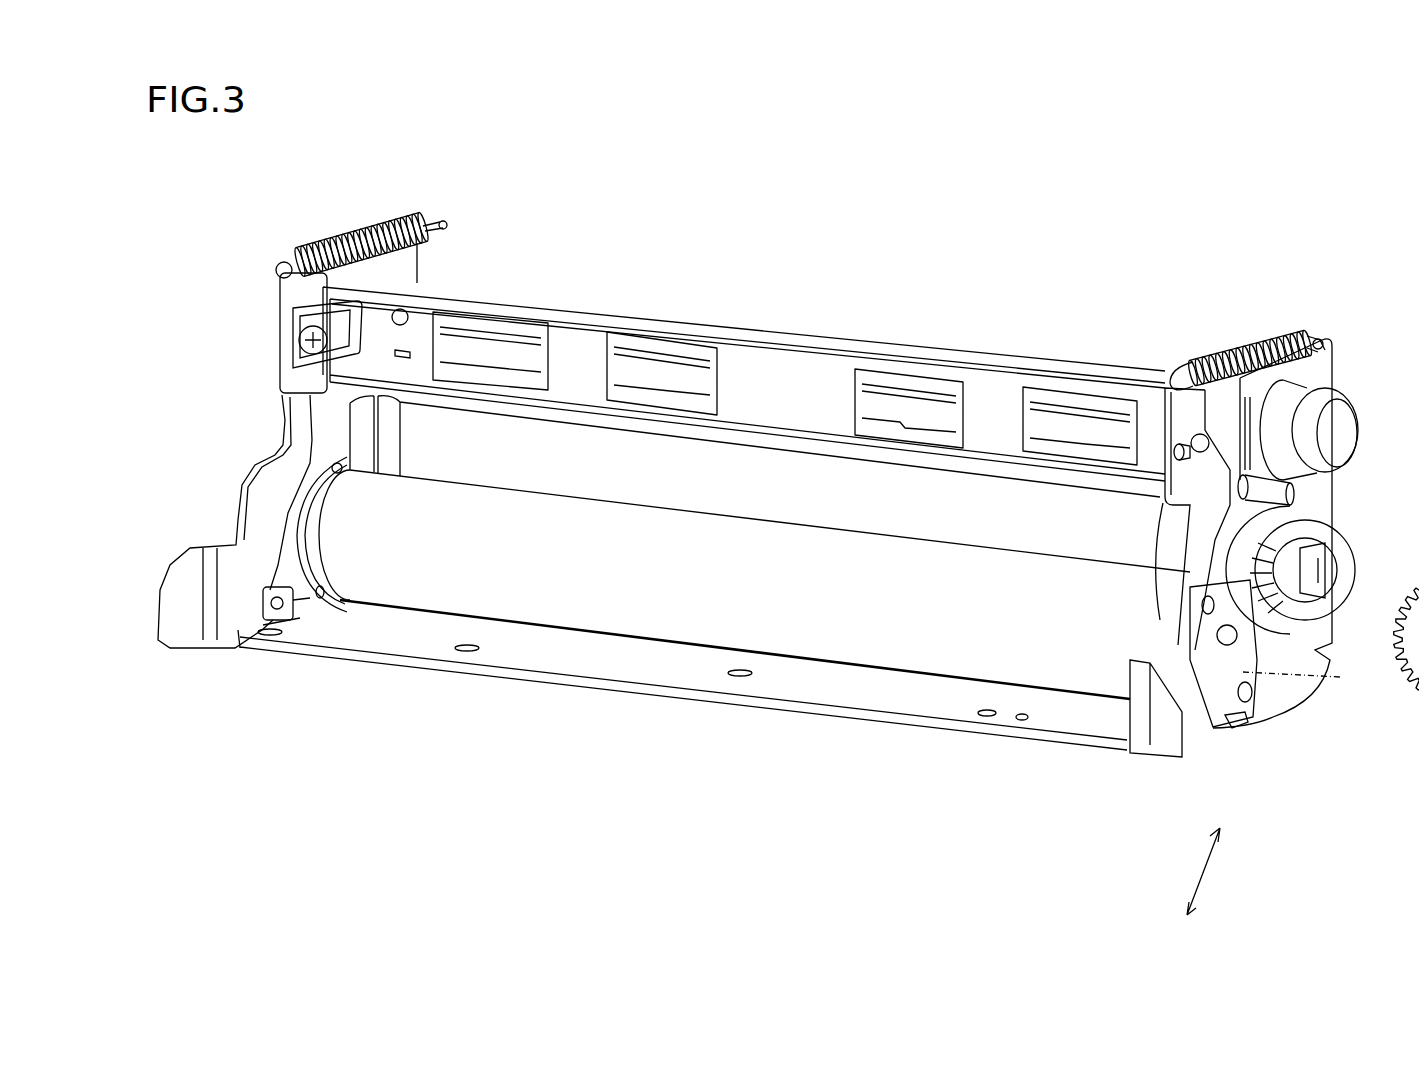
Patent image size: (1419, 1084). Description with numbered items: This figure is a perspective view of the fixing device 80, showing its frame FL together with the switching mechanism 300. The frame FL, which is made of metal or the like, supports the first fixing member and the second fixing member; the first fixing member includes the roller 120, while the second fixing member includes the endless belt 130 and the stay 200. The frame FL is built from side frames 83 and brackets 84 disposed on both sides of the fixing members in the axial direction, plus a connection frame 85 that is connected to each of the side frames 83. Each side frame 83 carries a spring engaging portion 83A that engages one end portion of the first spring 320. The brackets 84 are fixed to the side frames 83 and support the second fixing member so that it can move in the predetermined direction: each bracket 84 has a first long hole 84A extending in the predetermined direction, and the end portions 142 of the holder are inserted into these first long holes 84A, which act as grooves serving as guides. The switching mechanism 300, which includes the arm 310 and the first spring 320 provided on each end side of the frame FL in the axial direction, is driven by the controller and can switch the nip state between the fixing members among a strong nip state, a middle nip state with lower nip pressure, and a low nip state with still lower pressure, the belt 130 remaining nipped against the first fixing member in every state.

The fixing device 80 is at (1212, 196).
The side frame 83 is at (230, 622).
The spring engaging portion 83A is at (437, 224).
The bracket 84 is at (1252, 720).
The first long hole 84A is at (1213, 713).
The connection frame 85 is at (744, 378).
The roller 120 is at (744, 378).
The endless belt 130 is at (806, 636).
The end portion of the holder 142 is at (1234, 724).
The stay 200 is at (1313, 673).
The switching mechanism 300 is at (1203, 335).
The arm 310 is at (268, 323).
The first spring 320 is at (370, 224).
The frame FL is at (767, 328).